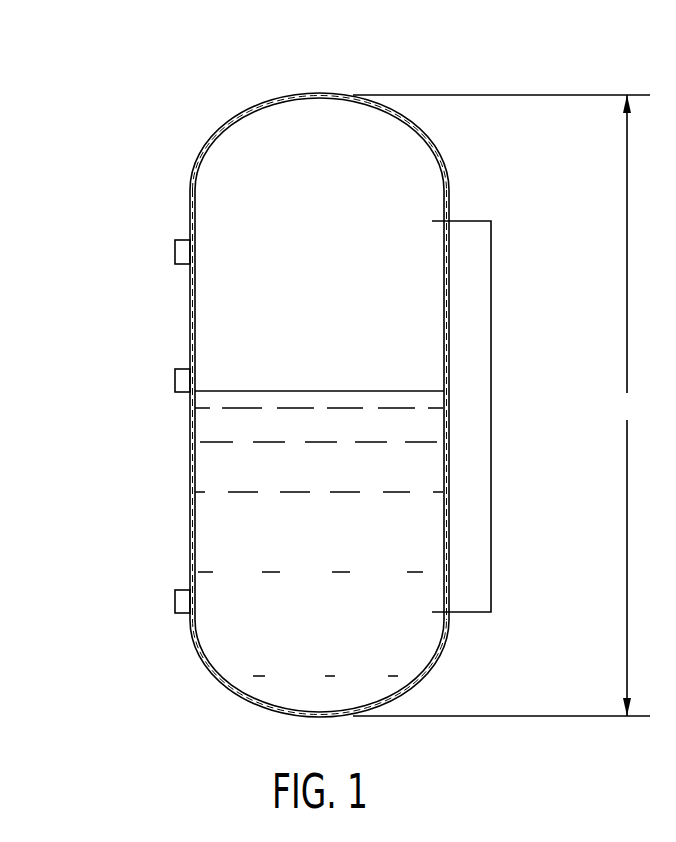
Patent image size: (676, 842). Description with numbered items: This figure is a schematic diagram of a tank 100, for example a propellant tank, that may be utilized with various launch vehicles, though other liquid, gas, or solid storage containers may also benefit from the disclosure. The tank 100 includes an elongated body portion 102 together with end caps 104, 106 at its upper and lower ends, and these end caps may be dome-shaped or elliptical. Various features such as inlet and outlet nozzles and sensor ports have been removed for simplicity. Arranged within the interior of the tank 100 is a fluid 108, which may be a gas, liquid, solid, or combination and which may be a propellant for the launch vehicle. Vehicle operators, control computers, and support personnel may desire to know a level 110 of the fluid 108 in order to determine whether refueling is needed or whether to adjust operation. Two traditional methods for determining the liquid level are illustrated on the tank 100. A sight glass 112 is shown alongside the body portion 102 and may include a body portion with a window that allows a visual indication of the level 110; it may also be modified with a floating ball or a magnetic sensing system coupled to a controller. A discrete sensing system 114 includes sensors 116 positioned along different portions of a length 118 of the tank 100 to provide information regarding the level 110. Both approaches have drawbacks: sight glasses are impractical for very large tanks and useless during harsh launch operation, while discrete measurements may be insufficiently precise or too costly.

The tank 100 is at (118, 46).
The elongated body portion 102 is at (188, 205).
The end cap 104 is at (218, 132).
The end cap 106 is at (257, 700).
The fluid 108 is at (232, 475).
The level 110 is at (254, 391).
The sight glass 112 is at (499, 294).
The discrete sensing system 114 is at (156, 644).
The sensors 116 is at (174, 252).
The length 118 is at (501, 405).